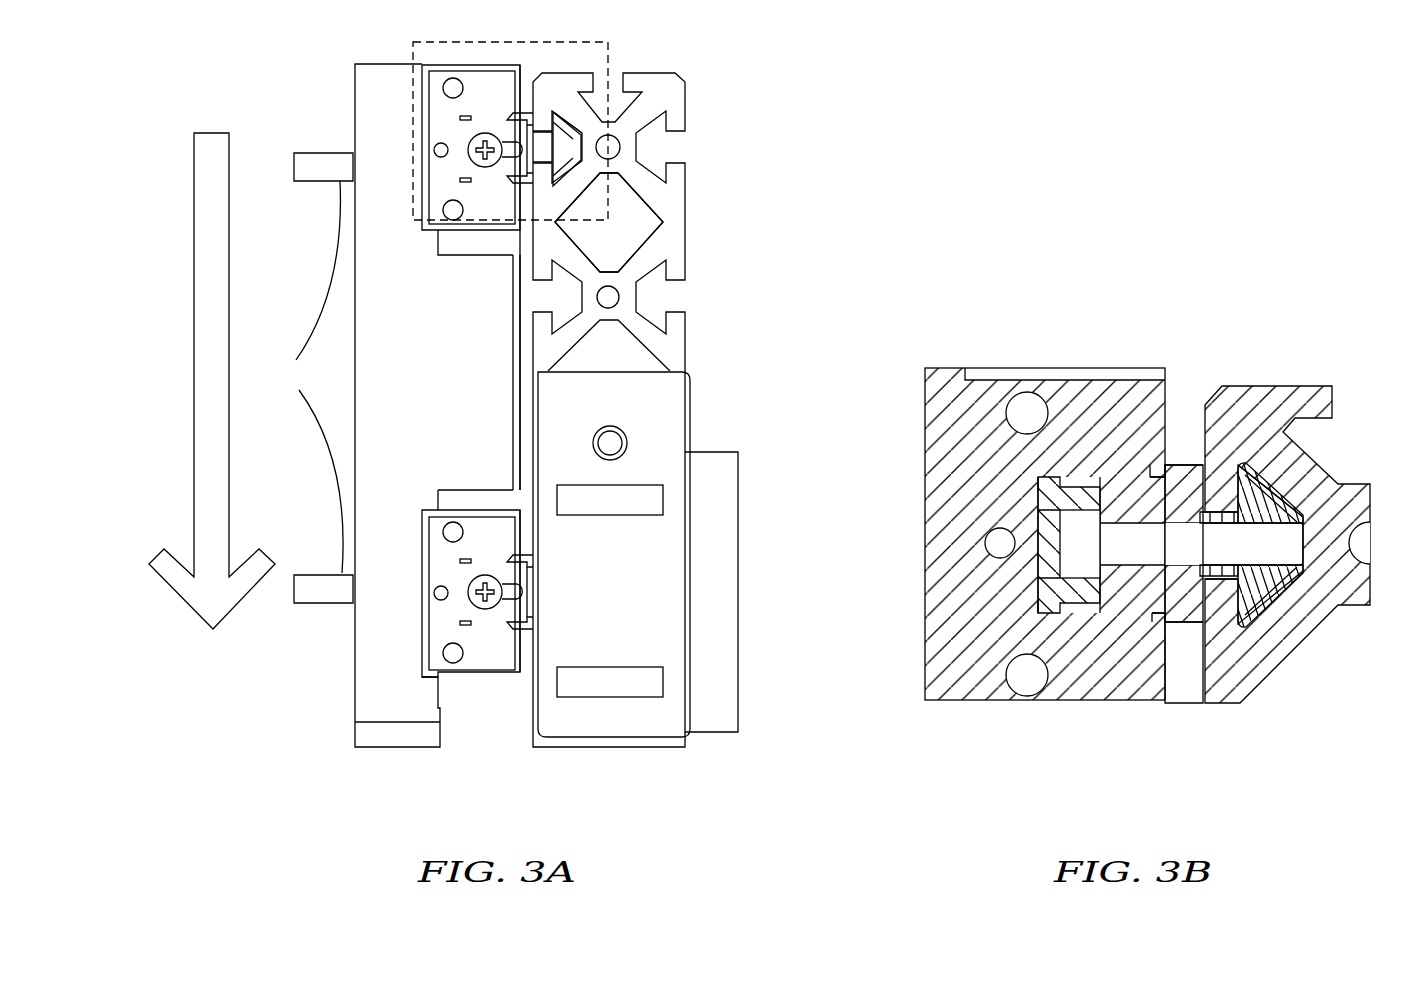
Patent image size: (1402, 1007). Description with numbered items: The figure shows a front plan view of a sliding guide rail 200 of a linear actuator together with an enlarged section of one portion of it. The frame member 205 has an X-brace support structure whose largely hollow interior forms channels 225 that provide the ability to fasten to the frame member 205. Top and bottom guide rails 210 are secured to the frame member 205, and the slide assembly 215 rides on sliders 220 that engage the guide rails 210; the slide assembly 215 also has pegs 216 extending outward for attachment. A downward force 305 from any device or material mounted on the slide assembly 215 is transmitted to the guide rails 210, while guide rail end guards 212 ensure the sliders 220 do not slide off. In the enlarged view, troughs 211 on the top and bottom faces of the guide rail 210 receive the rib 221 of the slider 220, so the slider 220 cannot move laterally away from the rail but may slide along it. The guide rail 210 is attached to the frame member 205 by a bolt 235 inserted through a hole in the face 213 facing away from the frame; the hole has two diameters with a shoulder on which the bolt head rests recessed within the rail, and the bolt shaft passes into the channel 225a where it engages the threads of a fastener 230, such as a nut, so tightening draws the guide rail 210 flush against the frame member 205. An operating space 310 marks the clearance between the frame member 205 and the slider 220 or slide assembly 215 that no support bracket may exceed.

In FIG. 3A, the sliding guide rail 200 is at (787, 108).
In FIG. 3A, the frame member 205 is at (660, 72).
In FIG. 3B, the frame member 205 is at (1315, 388).
In FIG. 3A, the guide rail 210 is at (525, 113).
In FIG. 3B, the guide rail 210 is at (1182, 462).
In FIG. 3B, the troughs 211 is at (1172, 592).
In FIG. 3A, the guide rail end guards 212 is at (487, 167).
In FIG. 3B, the guide rail end guards 212 is at (1170, 545).
In FIG. 3B, the face 213 is at (1168, 462).
In FIG. 3A, the slide assembly 215 is at (371, 63).
In FIG. 3A, the pegs 216 is at (304, 377).
In FIG. 3A, the slider 220 is at (494, 66).
In FIG. 3B, the slider 220 is at (947, 368).
In FIG. 3B, the rib 221 is at (1040, 490).
In FIG. 3A, the channels 225 is at (560, 297).
In FIG. 3A, the channel 225a is at (572, 135).
In FIG. 3B, the channel 225a is at (1283, 590).
In FIG. 3A, the fastener 230 is at (558, 138).
In FIG. 3B, the fastener 230 is at (1257, 505).
In FIG. 3B, the bolt 235 is at (1215, 583).
In FIG. 3A, the force 305 is at (211, 132).
In FIG. 3B, the operating space 310 is at (1203, 708).